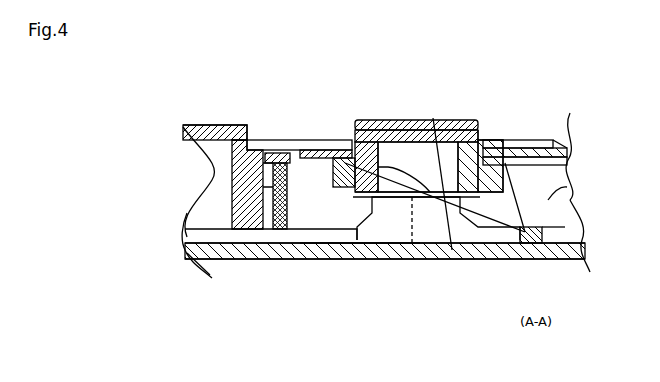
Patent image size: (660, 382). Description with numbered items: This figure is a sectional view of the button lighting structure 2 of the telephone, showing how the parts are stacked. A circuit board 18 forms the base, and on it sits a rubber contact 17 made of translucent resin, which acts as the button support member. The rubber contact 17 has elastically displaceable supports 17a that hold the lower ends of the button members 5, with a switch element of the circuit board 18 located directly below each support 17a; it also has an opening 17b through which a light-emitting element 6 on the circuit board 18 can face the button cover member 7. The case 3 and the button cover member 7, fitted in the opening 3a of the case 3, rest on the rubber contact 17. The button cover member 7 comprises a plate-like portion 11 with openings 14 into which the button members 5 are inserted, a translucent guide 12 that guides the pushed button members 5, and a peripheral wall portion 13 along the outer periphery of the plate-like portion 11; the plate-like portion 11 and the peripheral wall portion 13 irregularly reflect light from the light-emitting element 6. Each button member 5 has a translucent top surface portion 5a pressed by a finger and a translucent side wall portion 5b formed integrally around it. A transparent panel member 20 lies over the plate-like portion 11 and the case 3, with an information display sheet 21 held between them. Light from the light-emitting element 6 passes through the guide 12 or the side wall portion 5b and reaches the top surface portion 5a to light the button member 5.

The button lighting structure 2 is at (280, 286).
The case 3 is at (213, 124).
The opening 3a is at (190, 250).
The button member 5 is at (463, 118).
The top surface portion 5a is at (438, 120).
The side wall portion 5b is at (452, 250).
The light-emitting element 6 is at (520, 262).
The button cover member 7 is at (318, 45).
The plate-like portion 11 is at (327, 140).
The translucent guide 12 is at (303, 140).
The peripheral wall portion 13 is at (258, 160).
The opening 14 is at (487, 140).
The rubber contact 17 is at (187, 213).
The support 17a is at (413, 259).
The opening 17b is at (572, 205).
The circuit board 18 is at (337, 260).
The transparent panel member 20 is at (510, 138).
The information display sheet 21 is at (537, 138).